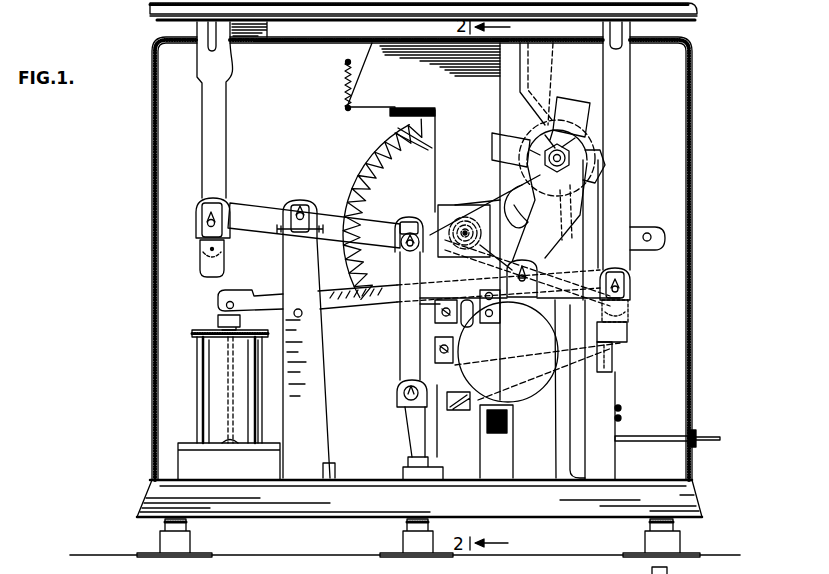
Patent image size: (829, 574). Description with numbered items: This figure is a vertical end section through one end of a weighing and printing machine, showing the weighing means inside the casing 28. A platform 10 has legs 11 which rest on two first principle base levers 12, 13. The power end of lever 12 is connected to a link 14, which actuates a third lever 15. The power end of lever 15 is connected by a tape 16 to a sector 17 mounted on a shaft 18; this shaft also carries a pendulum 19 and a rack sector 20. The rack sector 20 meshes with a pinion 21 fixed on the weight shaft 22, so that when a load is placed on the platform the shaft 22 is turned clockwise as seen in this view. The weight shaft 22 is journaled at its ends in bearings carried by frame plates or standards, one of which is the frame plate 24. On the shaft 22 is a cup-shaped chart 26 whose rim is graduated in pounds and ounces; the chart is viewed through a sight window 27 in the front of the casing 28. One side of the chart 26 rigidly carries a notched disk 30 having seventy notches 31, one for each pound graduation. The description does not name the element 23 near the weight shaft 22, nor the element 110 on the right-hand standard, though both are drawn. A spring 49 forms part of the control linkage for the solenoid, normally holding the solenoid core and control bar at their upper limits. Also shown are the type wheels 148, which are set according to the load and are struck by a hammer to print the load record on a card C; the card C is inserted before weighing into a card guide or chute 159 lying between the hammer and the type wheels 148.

The platform 10 is at (150, 11).
The legs 11 is at (205, 125).
The first principle base lever 12 is at (255, 212).
The first principle base lever 13 is at (268, 296).
The link 14 is at (404, 344).
The third lever 15 is at (527, 370).
The tape 16 is at (603, 222).
The sector 17 is at (562, 156).
The shaft 18 is at (590, 153).
The pendulum 19 is at (521, 402).
The rack sector 20 is at (532, 172).
The pinion 21 is at (430, 200).
The weight shaft 22 is at (436, 238).
The spiral spring 23 is at (494, 252).
The frame plate 24 is at (500, 70).
The cup-shaped chart 26 is at (372, 181).
The sight window 27 is at (550, 110).
The casing 28 is at (691, 127).
The notched disk 30 is at (374, 209).
The notches 31 is at (398, 140).
The spring 49 is at (346, 78).
The lug 110 is at (652, 236).
The type wheels 148 is at (622, 413).
The card guide 159 is at (668, 452).
The card C is at (708, 444).